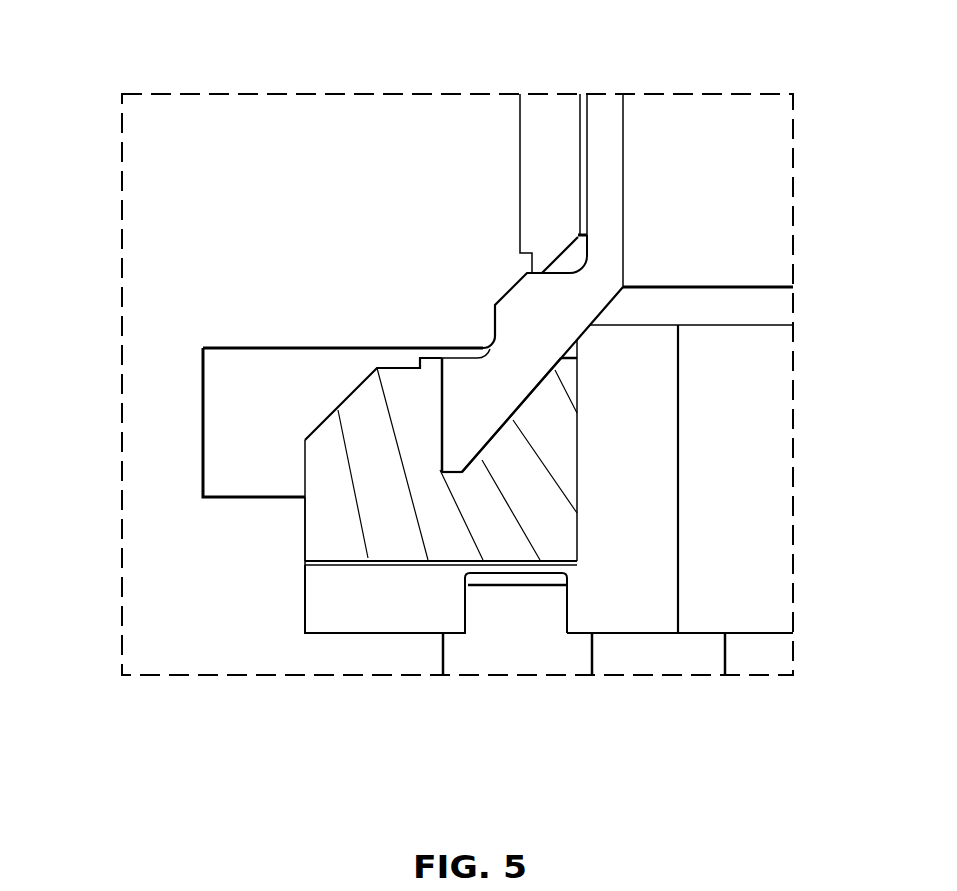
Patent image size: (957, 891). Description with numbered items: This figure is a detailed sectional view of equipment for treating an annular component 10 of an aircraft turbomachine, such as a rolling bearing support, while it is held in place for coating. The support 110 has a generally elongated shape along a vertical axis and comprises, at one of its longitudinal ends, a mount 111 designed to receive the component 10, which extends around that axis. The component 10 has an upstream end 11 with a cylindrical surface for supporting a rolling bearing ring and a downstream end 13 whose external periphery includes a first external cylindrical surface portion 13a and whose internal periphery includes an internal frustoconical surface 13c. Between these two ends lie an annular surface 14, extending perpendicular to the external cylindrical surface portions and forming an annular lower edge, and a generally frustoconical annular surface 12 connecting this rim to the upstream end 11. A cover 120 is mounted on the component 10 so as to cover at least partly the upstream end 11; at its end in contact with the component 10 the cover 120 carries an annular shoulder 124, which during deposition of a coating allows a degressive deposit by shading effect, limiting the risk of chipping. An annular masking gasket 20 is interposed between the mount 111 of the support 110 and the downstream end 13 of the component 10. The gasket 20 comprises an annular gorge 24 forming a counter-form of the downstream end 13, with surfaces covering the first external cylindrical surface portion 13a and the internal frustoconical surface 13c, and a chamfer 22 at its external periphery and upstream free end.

The annular component 10 is at (660, 242).
The upstream end 11 is at (602, 105).
The cover 120 is at (555, 108).
The annular shoulder 124 is at (520, 254).
The annular surface 12 is at (507, 294).
The annular surface 14 is at (460, 360).
The downstream end 13 is at (480, 395).
The first external cylindrical surface portion 13a is at (440, 430).
The internal frustoconical surface 13c is at (540, 390).
The chamfer 22 is at (323, 417).
The annular gorge 24 is at (458, 474).
The annular masking gasket 20 is at (280, 529).
The mount 111 is at (303, 632).
The support 110 is at (560, 690).